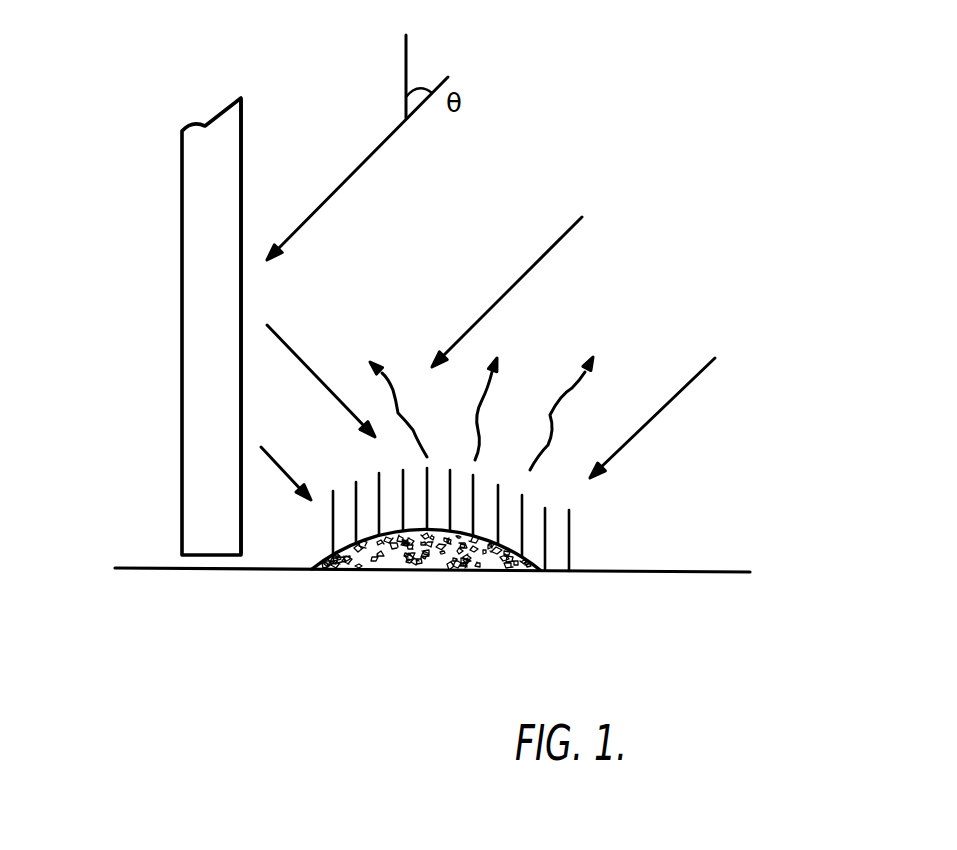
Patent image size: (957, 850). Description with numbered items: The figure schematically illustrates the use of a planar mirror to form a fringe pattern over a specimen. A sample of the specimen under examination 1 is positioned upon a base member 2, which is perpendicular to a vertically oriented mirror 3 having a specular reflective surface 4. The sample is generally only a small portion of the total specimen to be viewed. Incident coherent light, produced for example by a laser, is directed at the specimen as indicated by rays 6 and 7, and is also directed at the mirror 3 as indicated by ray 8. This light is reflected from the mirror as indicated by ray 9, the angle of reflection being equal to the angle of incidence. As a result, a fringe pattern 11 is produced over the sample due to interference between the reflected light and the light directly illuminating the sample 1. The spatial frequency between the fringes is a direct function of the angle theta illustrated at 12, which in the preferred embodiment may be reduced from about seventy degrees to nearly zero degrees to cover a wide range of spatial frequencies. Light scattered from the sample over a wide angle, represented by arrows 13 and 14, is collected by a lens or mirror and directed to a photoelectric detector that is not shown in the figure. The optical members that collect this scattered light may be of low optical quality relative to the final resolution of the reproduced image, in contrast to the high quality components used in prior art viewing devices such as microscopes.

The sample of the specimen under examination 1 is at (373, 571).
The base member 2 is at (590, 570).
The mirror 3 is at (183, 227).
The specular reflective surface 4 is at (243, 152).
The ray 6 is at (550, 248).
The ray 7 is at (678, 395).
The ray 8 is at (355, 175).
The ray 9 is at (292, 345).
The fringe pattern 11 is at (478, 480).
The angle theta 12 is at (425, 67).
The arrow 13 is at (582, 393).
The arrow 14 is at (400, 415).